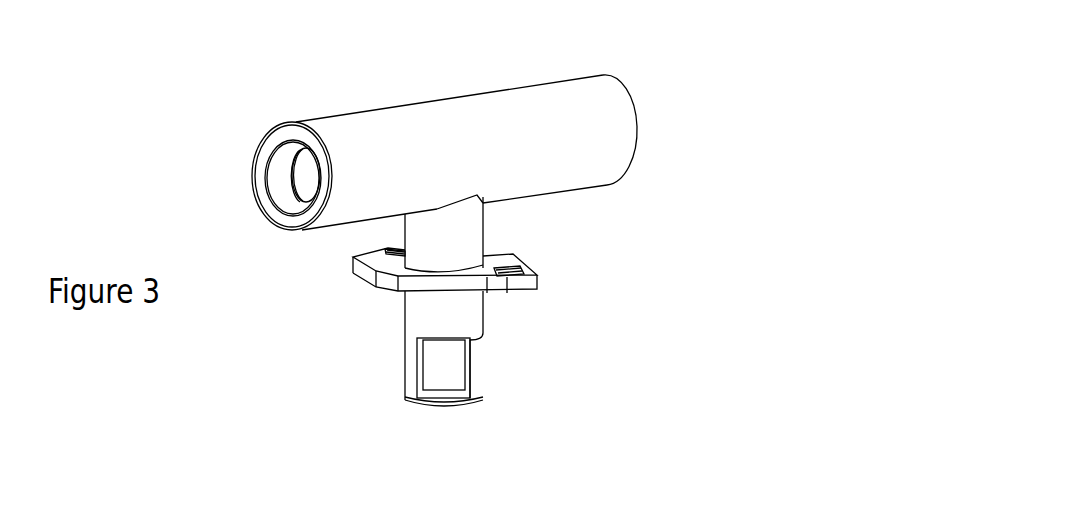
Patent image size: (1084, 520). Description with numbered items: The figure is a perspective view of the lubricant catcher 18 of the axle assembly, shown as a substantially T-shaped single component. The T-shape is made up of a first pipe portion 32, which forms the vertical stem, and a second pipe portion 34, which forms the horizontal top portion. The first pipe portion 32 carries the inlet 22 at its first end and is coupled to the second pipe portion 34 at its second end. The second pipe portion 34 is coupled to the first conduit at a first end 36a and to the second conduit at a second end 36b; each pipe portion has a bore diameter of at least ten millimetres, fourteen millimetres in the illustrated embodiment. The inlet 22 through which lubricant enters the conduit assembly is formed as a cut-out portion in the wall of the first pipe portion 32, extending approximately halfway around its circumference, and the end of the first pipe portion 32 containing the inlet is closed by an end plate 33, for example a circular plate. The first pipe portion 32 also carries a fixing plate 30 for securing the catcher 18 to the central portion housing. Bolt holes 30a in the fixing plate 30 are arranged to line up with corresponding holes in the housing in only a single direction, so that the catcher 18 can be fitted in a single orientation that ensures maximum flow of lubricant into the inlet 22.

The lubricant catcher 18 is at (612, 224).
The inlet 22 is at (450, 368).
The fixing plate 30 is at (390, 285).
The bolt holes 30a is at (388, 255).
The first pipe portion 32 is at (415, 322).
The end plate 33 is at (442, 402).
The second pipe portion 34 is at (373, 142).
The first end 36a is at (632, 102).
The second end 36b is at (287, 175).